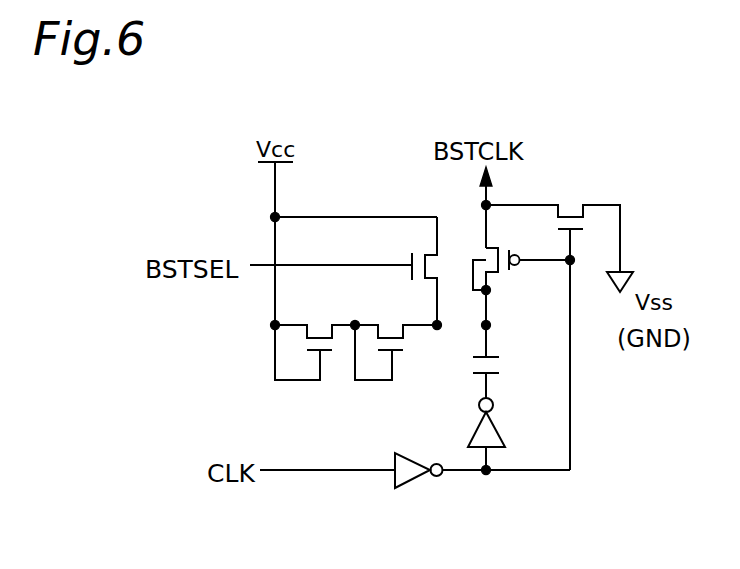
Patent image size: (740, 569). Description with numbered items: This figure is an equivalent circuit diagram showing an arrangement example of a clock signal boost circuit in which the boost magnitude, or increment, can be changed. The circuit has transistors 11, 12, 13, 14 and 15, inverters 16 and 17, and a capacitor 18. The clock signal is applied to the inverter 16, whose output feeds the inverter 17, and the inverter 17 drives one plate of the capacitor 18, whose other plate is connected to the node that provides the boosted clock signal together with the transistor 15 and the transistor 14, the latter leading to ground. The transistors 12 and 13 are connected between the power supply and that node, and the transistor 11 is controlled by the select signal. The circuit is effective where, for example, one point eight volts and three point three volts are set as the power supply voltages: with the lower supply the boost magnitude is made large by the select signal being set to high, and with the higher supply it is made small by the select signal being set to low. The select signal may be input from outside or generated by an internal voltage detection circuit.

The transistor 11 is at (412, 255).
The transistor 12 is at (318, 322).
The transistor 13 is at (389, 322).
The transistor 14 is at (573, 205).
The transistor 15 is at (512, 276).
The inverter 16 is at (415, 478).
The inverter 17 is at (475, 432).
The capacitor 18 is at (500, 365).